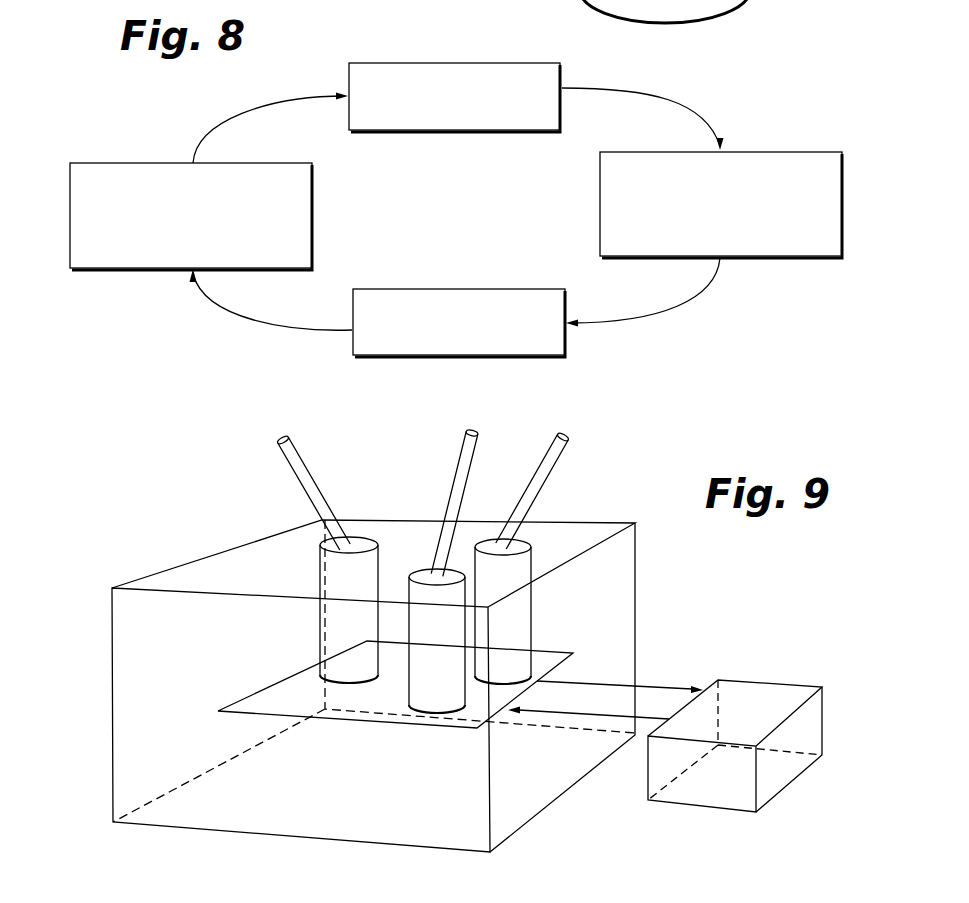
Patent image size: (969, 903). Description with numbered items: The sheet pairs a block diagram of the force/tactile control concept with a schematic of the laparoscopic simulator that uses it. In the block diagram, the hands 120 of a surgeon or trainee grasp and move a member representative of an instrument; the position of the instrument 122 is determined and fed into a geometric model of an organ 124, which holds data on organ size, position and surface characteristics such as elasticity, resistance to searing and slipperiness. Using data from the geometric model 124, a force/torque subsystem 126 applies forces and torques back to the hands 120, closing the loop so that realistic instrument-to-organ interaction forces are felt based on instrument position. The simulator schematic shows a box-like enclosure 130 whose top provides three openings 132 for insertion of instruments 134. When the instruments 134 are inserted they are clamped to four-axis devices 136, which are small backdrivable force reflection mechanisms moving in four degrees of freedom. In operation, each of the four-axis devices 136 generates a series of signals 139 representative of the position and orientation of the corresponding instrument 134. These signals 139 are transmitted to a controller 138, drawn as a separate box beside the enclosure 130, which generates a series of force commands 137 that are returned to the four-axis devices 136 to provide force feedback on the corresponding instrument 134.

In FIG. 8, the hands 120 is at (409, 289).
In FIG. 8, the position of the instrument 122 is at (119, 163).
In FIG. 8, the geometric model of an organ 124 is at (392, 63).
In FIG. 8, the force/torque subsystem 126 is at (757, 152).
In FIG. 9, the box-like enclosure 130 is at (128, 618).
In FIG. 9, the openings 132 is at (467, 531).
In FIG. 9, the instruments 134 is at (265, 464).
In FIG. 9, the four-axis devices 136 is at (503, 678).
In FIG. 9, the force commands 137 is at (600, 717).
In FIG. 9, the controller 138 is at (745, 682).
In FIG. 9, the signals 139 is at (658, 688).